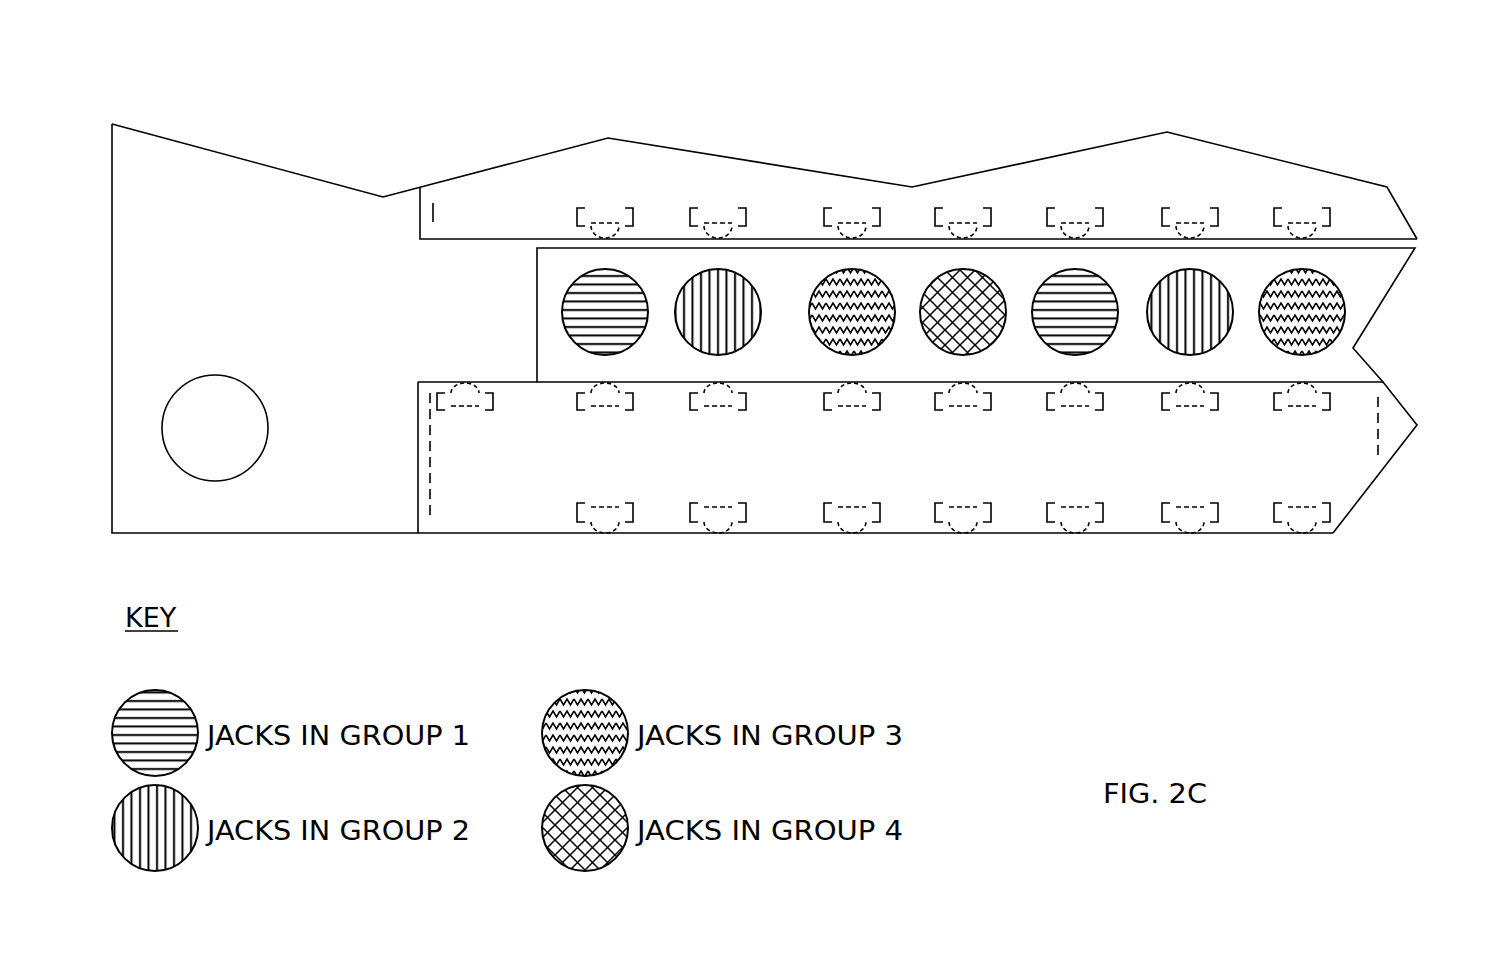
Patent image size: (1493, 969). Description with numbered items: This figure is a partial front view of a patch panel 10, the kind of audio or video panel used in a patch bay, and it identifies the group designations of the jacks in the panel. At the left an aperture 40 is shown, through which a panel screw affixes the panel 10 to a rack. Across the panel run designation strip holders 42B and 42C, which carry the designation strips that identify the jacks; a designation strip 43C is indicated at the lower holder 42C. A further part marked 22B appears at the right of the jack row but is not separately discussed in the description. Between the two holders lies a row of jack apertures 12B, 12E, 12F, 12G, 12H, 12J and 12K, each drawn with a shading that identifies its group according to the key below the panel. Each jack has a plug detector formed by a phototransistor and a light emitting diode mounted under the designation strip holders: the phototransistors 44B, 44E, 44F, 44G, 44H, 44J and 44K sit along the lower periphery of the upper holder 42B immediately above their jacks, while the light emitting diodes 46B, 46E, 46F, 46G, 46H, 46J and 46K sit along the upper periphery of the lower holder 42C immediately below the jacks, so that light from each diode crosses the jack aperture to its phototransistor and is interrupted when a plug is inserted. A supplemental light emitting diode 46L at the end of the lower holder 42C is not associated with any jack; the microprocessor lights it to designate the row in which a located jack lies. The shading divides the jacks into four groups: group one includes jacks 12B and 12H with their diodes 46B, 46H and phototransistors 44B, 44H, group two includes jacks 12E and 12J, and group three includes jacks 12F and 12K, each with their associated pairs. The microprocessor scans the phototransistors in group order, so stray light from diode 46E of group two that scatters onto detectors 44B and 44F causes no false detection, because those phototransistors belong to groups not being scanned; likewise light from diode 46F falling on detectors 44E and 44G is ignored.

The patch panel 10 is at (285, 453).
The aperture 40 is at (212, 453).
The designation strip holder 42B is at (1348, 200).
The designation strip holder 42C is at (1345, 442).
The designation strip 43C is at (417, 510).
The jack panel 22B is at (1333, 365).
The phototransistor 44B is at (601, 226).
The phototransistor 44E is at (714, 226).
The phototransistor 44F is at (848, 226).
The phototransistor 44G is at (959, 226).
The phototransistor 44H is at (1071, 226).
The phototransistor 44J is at (1186, 226).
The phototransistor 44K is at (1298, 226).
The jack aperture 12B is at (570, 351).
The jack aperture 12E is at (683, 351).
The jack aperture 12F is at (817, 351).
The jack aperture 12G is at (928, 351).
The jack aperture 12H is at (1040, 351).
The jack aperture 12J is at (1155, 351).
The jack aperture 12K is at (1267, 351).
The light emitting diode 46B is at (577, 412).
The light emitting diode 46E is at (690, 412).
The light emitting diode 46F is at (824, 412).
The light emitting diode 46G is at (935, 412).
The light emitting diode 46H is at (1047, 412).
The light emitting diode 46J is at (1162, 412).
The light emitting diode 46K is at (1274, 412).
The supplemental LED 46L is at (475, 412).